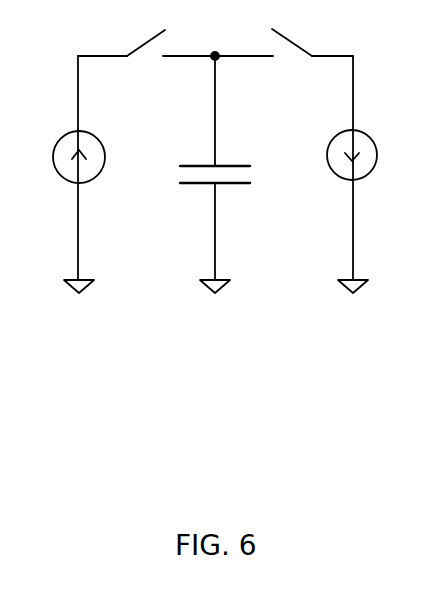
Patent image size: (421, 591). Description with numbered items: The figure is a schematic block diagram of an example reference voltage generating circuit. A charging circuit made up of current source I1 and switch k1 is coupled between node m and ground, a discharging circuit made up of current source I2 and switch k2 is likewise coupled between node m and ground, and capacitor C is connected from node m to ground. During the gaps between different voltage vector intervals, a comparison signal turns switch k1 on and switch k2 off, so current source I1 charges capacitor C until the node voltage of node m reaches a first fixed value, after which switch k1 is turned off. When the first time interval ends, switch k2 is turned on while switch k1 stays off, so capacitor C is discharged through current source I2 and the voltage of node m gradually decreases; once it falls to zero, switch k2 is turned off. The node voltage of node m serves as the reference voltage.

The switch k1 is at (137, 36).
The switch k2 is at (308, 39).
The node m is at (226, 39).
The capacitor C is at (230, 175).
The current source I1 is at (58, 157).
The current source I2 is at (368, 155).